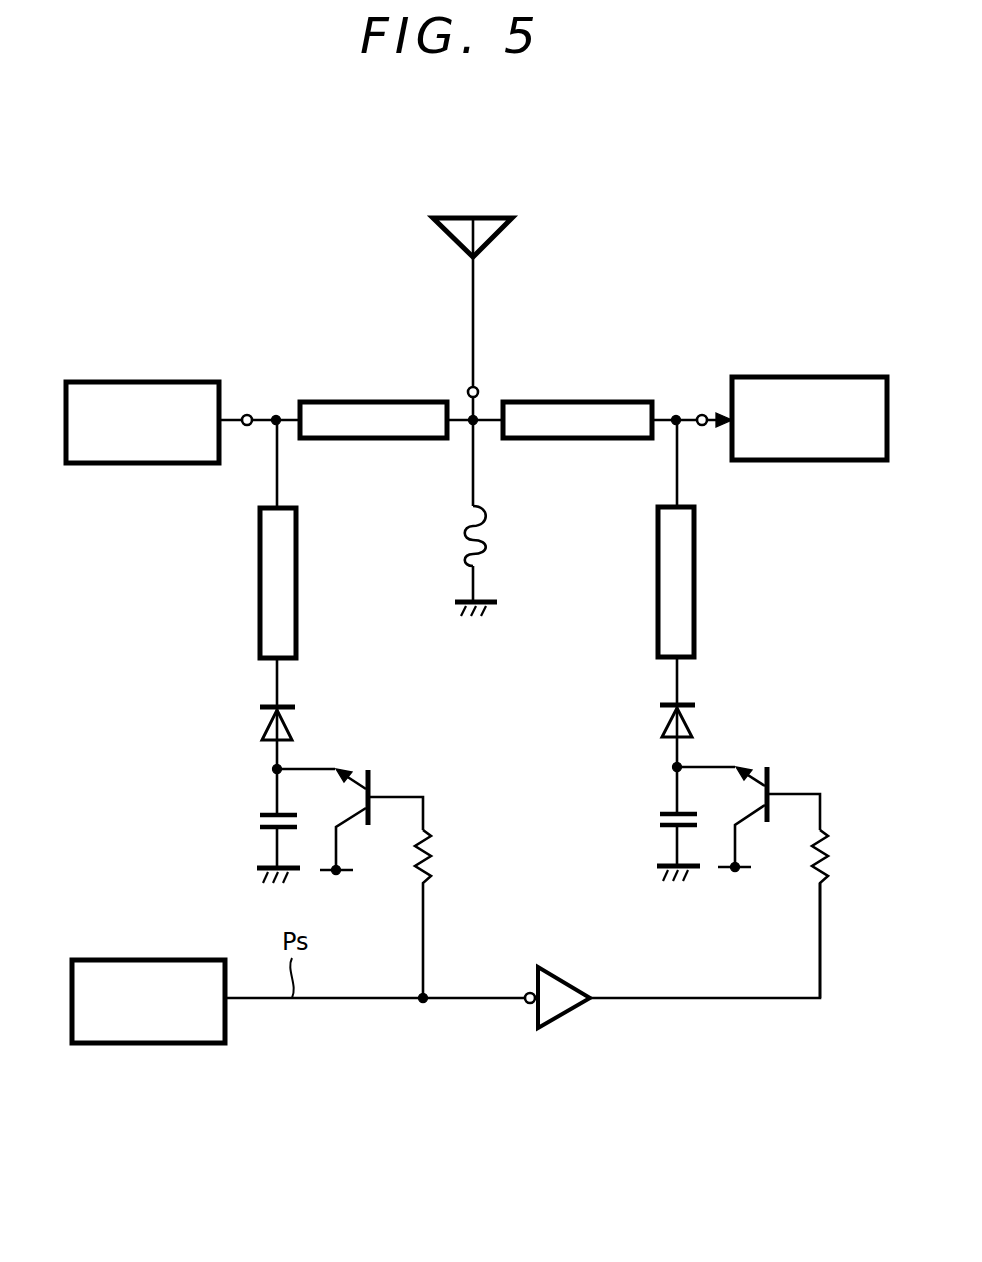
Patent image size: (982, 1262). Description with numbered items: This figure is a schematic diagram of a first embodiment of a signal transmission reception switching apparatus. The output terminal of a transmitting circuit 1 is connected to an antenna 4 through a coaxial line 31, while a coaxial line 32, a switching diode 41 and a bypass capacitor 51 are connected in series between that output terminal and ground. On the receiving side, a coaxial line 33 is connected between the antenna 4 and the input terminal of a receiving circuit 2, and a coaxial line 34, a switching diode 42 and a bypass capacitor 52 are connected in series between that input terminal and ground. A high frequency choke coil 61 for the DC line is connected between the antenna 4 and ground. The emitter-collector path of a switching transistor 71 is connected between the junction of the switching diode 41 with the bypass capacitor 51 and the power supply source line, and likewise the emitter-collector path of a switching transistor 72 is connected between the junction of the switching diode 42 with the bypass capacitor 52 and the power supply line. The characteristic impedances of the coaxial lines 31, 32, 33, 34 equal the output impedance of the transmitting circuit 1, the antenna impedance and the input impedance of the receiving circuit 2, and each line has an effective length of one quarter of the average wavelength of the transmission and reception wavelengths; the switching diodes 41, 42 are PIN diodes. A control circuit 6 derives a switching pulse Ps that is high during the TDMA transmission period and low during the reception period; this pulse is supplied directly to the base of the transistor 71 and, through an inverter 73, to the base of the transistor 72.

The transmitting circuit 1 is at (137, 463).
The receiving circuit 2 is at (805, 460).
The antenna 4 is at (476, 292).
The control circuit 6 is at (140, 1043).
The coaxial line 31 is at (367, 440).
The coaxial line 32 is at (296, 627).
The coaxial line 33 is at (568, 440).
The coaxial line 34 is at (694, 627).
The switching diode 41 is at (293, 727).
The switching diode 42 is at (693, 725).
The bypass capacitor 51 is at (260, 822).
The bypass capacitor 52 is at (660, 818).
The high frequency choke coil 61 is at (490, 547).
The switching transistor 71 is at (375, 826).
The switching transistor 72 is at (778, 821).
The inverter 73 is at (560, 1030).